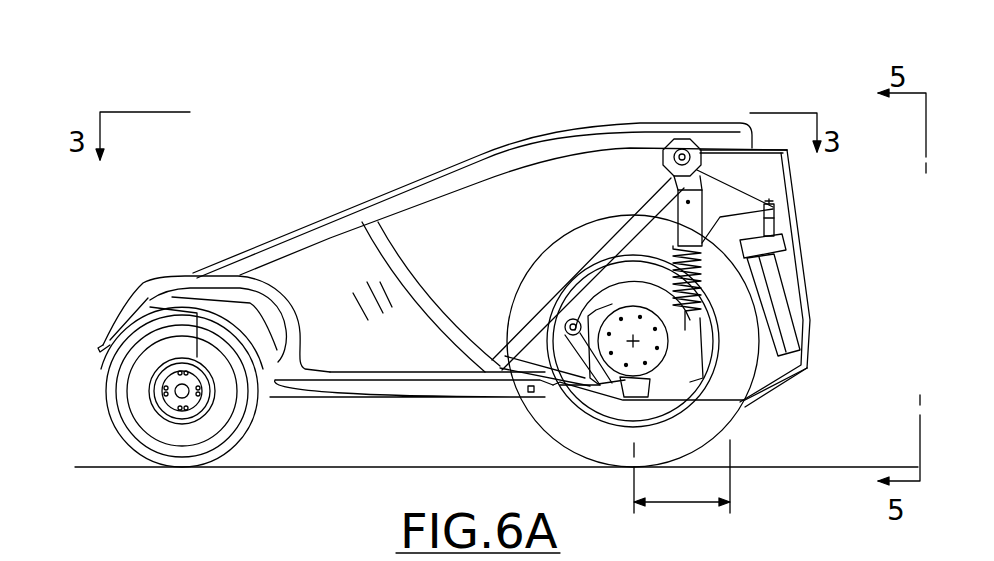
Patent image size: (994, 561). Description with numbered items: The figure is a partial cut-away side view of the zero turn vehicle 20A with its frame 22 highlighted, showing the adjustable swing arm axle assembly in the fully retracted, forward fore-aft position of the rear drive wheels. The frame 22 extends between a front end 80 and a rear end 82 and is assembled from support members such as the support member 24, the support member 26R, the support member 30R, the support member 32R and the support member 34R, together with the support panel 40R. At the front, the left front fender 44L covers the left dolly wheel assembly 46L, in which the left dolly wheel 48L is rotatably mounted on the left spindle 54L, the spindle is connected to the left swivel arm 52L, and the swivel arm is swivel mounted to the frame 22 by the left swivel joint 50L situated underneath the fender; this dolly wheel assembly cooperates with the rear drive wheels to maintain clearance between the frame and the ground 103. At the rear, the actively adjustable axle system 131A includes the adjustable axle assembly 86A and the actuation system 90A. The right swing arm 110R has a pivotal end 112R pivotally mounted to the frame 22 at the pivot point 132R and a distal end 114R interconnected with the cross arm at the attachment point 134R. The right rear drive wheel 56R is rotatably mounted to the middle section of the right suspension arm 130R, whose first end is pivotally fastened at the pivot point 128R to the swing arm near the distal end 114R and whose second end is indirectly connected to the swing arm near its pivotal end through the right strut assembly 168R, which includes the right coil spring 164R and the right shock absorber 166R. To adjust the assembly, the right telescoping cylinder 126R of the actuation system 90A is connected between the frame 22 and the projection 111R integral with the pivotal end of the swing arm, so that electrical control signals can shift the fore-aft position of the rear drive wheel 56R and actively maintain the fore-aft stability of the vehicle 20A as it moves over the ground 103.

The vehicle 20A is at (240, 162).
The frame 22 is at (458, 162).
The support member 24 is at (322, 232).
The support member 26R is at (757, 395).
The support member 30R is at (400, 267).
The support member 32R is at (492, 373).
The support member 34R is at (805, 192).
The support panel 40R is at (362, 257).
The left front fender 44L is at (184, 275).
The left dolly wheel assembly 46L is at (118, 450).
The left dolly wheel 48L is at (207, 458).
The left swivel joint 50L is at (250, 303).
The left swivel arm 52L is at (110, 332).
The left spindle 54L is at (182, 391).
The right rear drive wheel 56R is at (590, 223).
The front end 80 is at (138, 267).
The rear end 82 is at (838, 112).
The adjustable axle assembly 86A is at (560, 127).
The actuation system 90A is at (772, 345).
The ground 103 is at (378, 467).
The right swing arm 110R is at (607, 275).
The right projection 111R is at (735, 200).
The right pivotal end 112R is at (700, 133).
The right distal end 114R is at (577, 390).
The right telescoping cylinder 126R is at (780, 280).
The right pivot point 128R is at (567, 320).
The right suspension arm 130R is at (667, 367).
The actively adjustable axle system 131A is at (818, 315).
The right pivot point 132R is at (668, 168).
The right attachment point 134R is at (577, 400).
The right coil spring 164R is at (776, 215).
The right shock absorber 166R is at (697, 367).
The right strut assembly 168R is at (710, 212).